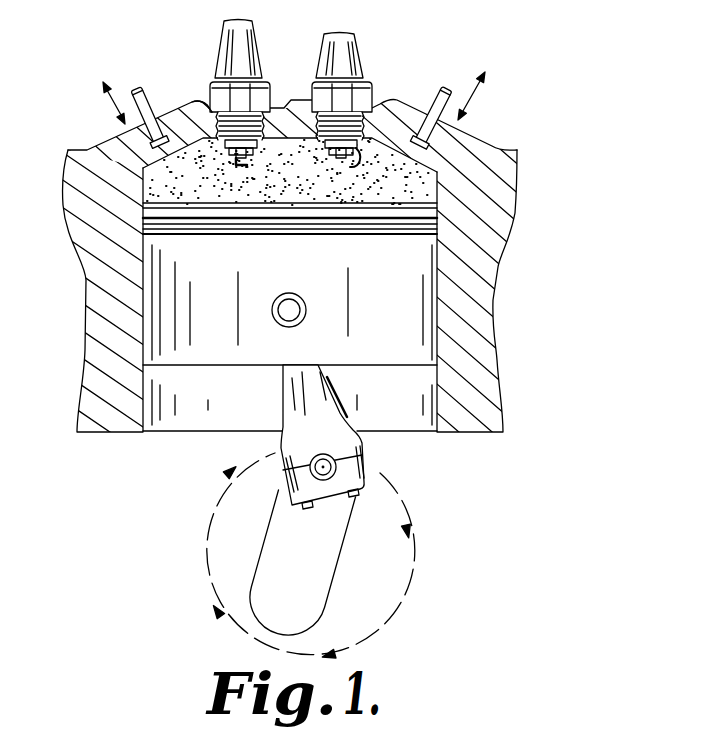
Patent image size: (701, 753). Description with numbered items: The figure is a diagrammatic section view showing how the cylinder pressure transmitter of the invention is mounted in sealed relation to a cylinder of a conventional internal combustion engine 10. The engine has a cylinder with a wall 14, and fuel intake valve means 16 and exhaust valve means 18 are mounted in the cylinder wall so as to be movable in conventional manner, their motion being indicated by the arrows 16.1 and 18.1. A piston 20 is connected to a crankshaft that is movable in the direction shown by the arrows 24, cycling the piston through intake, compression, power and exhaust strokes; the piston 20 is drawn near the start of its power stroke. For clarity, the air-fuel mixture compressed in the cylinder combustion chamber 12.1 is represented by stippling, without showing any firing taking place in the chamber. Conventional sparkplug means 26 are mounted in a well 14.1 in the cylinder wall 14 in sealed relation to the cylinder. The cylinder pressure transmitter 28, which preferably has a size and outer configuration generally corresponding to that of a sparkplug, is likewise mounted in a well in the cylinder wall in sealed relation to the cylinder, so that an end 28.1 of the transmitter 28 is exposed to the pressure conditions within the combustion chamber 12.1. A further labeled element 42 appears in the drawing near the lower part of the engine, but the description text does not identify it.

The internal combustion engine 10 is at (517, 218).
The cylinder combustion chamber 12.1 is at (423, 181).
The cylinder wall 14 is at (288, 120).
The well 14.1 is at (207, 102).
The fuel intake valve means 16 is at (147, 79).
The arrow 16.1 is at (112, 97).
The exhaust valve means 18 is at (454, 87).
The arrow 18.1 is at (470, 102).
The piston 20 is at (410, 316).
The arrows 24 is at (228, 474).
The sparkplug means 26 is at (222, 54).
The cylinder pressure transmitter 28 is at (355, 50).
The end of the transmitter 28.1 is at (354, 165).
The connecting rod and crank 42 is at (420, 428).